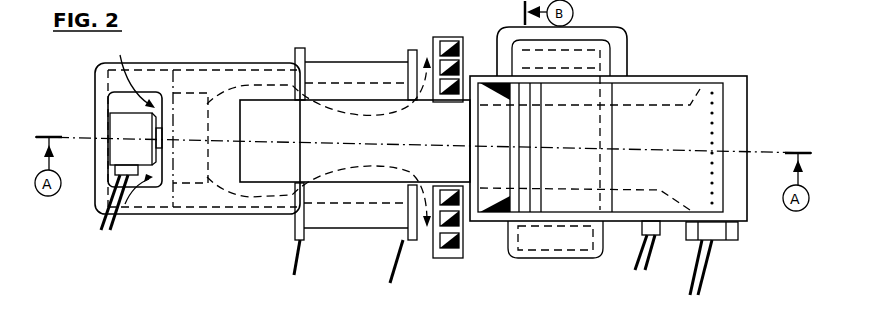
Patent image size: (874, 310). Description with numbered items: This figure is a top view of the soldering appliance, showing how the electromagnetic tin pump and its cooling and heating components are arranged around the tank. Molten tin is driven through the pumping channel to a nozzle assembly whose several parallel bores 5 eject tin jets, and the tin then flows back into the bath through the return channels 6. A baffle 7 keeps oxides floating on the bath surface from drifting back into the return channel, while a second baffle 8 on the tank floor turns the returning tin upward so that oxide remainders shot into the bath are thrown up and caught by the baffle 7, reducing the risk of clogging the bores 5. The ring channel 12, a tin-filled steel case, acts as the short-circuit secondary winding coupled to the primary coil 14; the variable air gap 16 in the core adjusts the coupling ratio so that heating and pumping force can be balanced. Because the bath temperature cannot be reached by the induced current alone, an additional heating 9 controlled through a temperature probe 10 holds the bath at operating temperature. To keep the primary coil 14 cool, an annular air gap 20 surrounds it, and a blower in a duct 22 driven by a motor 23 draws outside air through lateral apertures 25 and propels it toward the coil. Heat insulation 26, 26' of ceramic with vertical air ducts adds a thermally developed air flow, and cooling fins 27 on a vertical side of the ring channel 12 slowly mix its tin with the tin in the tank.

The parallel bores 5 is at (713, 183).
The return channels 6 is at (490, 90).
The baffle 7 is at (500, 205).
The baffle 8 is at (537, 208).
The additional heating 9 is at (720, 242).
The temperature probe 10 is at (657, 240).
The ring channel 12 is at (597, 50).
The primary coil 14 is at (338, 222).
The variable air gap 16 is at (445, 0).
The annular air gap 20 is at (377, 197).
The duct 22 is at (118, 232).
The motor 23 is at (122, 150).
The lateral apertures 25 is at (147, 183).
The heat insulation 26 is at (446, 155).
The filter holder 26' is at (354, 7).
The cooling fins 27 is at (618, 68).